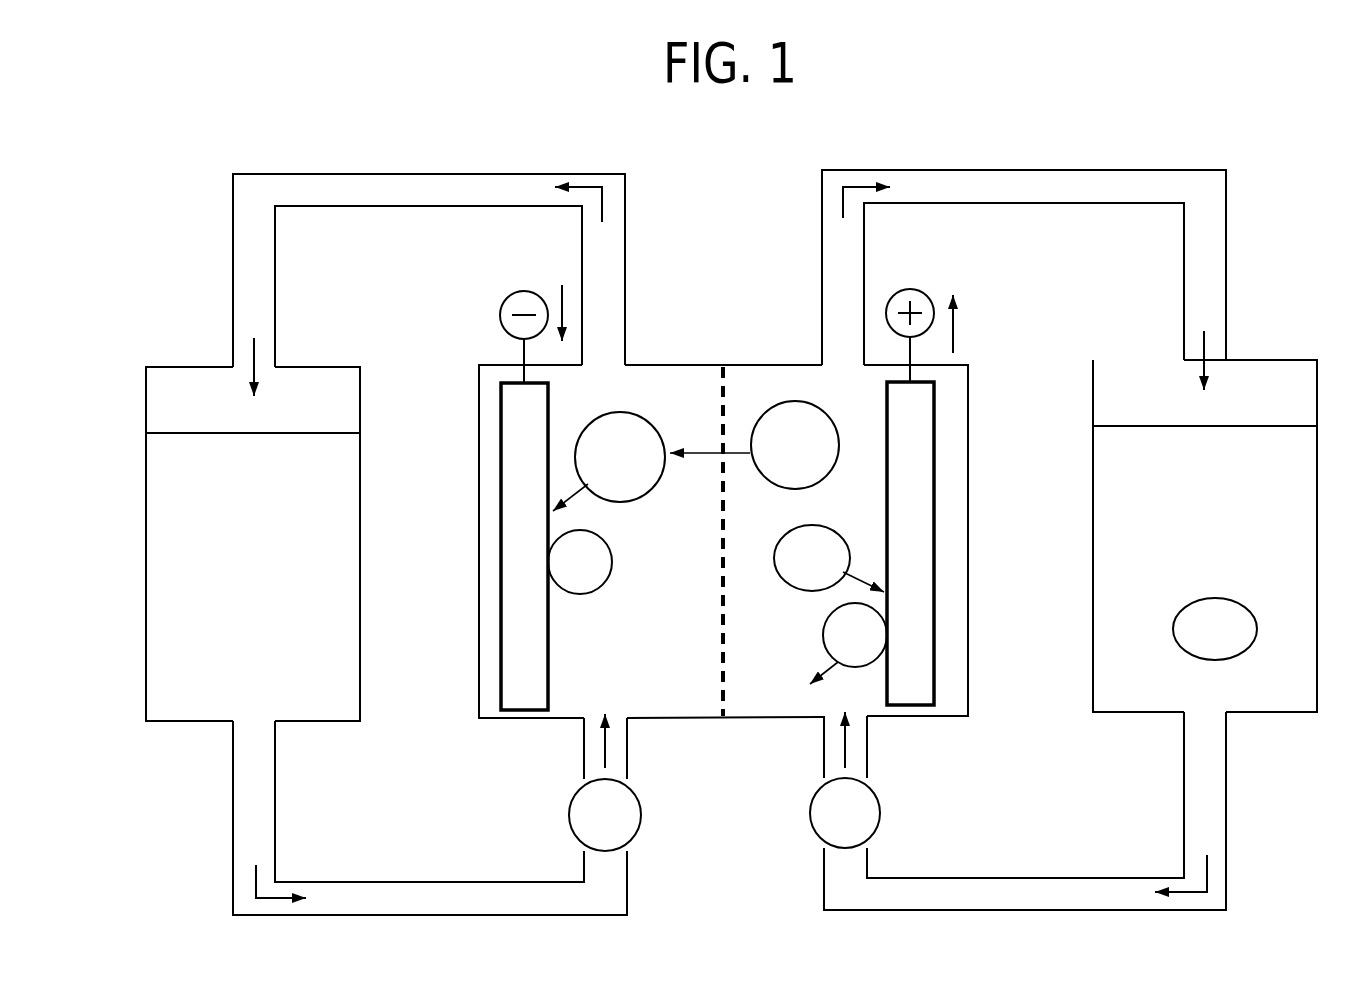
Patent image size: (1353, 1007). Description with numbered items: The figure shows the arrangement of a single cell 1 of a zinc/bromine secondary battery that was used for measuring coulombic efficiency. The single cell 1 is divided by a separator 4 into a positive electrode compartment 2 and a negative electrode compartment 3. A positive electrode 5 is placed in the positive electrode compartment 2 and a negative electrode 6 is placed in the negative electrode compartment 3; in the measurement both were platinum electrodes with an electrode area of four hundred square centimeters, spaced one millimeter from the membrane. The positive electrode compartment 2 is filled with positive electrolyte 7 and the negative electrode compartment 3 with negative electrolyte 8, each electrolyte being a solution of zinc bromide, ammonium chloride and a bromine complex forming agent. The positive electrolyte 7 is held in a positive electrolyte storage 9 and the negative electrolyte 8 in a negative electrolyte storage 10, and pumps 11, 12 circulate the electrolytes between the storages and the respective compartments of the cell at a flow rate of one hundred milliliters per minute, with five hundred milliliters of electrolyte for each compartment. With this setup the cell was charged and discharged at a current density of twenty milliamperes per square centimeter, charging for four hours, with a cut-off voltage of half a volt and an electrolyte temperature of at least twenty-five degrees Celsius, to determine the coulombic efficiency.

The single cell 1 is at (500, 720).
The positive electrode compartment 2 is at (872, 703).
The negative electrode compartment 3 is at (690, 712).
The separator 4 is at (720, 390).
The positive electrode 5 is at (920, 407).
The negative electrode 6 is at (515, 440).
The positive electrolyte 7 is at (1290, 700).
The negative electrolyte 8 is at (323, 708).
The positive electrolyte storage 9 is at (1288, 360).
The negative electrolyte storage 10 is at (320, 368).
The pump 11 is at (868, 820).
The pump 12 is at (578, 820).